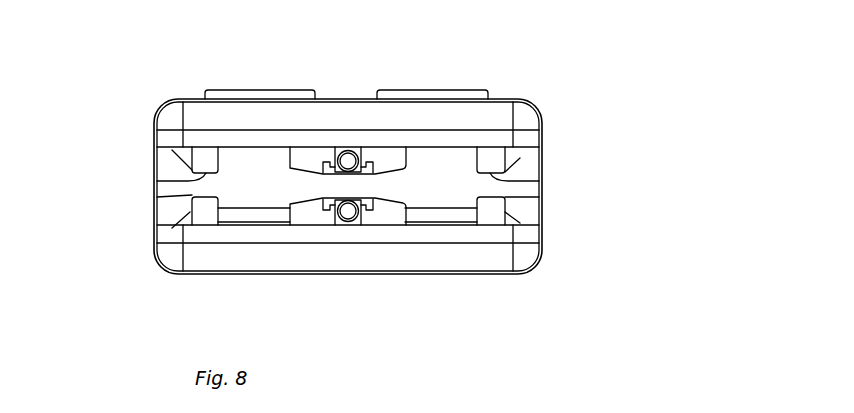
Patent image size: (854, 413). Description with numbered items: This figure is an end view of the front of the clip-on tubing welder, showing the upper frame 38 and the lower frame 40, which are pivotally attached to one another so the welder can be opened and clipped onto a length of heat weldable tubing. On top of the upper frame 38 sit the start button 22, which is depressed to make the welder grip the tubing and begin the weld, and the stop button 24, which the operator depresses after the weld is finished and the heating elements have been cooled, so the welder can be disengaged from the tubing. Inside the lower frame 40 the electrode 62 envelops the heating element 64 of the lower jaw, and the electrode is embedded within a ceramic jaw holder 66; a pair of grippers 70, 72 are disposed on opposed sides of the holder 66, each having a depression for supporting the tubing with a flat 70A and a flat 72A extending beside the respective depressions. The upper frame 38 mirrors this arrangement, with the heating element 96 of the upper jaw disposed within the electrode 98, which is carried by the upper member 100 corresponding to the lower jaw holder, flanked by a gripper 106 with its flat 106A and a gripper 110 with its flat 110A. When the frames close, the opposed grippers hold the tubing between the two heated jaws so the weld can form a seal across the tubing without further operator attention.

The start button 22 is at (275, 90).
The stop button 24 is at (470, 90).
The upper frame 38 is at (535, 108).
The lower frame 40 is at (543, 255).
The electrode 62 is at (370, 200).
The heating element 64 is at (351, 218).
The ceramic jaw holder 66 is at (397, 216).
The gripper 70 is at (497, 212).
The flat 70A is at (490, 198).
The gripper 72 is at (203, 215).
The flat 72A is at (152, 197).
The heating element 96 is at (355, 160).
The electrode 98 is at (371, 153).
The upper pivot support 100 is at (395, 162).
The gripper 106 is at (197, 158).
The flat 106A is at (155, 181).
The gripper 110 is at (493, 163).
The flat 110A is at (518, 175).